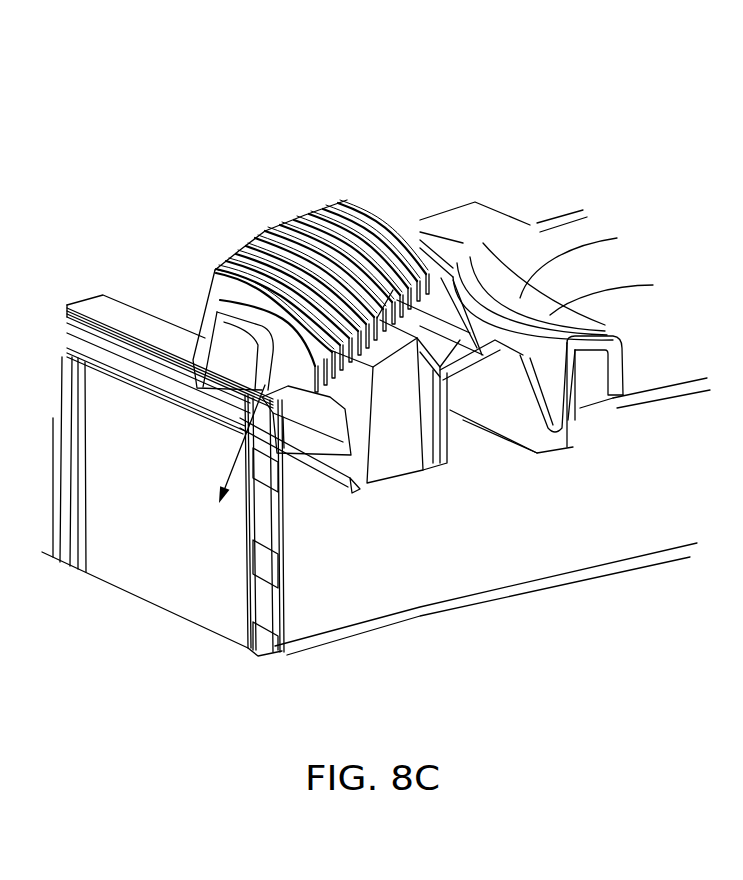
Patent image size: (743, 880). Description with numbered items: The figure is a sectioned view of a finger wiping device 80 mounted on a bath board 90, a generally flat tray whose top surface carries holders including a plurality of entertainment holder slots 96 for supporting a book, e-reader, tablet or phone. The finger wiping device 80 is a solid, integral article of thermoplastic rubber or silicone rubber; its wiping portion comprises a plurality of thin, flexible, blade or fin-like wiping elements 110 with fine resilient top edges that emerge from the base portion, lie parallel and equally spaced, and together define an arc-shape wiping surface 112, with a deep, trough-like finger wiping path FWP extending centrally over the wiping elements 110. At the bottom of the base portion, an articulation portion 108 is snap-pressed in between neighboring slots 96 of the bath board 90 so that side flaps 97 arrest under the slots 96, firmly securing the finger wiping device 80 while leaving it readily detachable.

The finger wiping device 80 is at (293, 176).
The bath board 90 is at (194, 614).
The entertainment holder slots 96 is at (352, 494).
The side flaps 97 is at (352, 494).
The articulation portion 108 is at (447, 447).
The wiping elements 110 is at (287, 233).
The arc-shape wiping surface 112 is at (327, 200).
The finger wiping path FWP is at (463, 243).